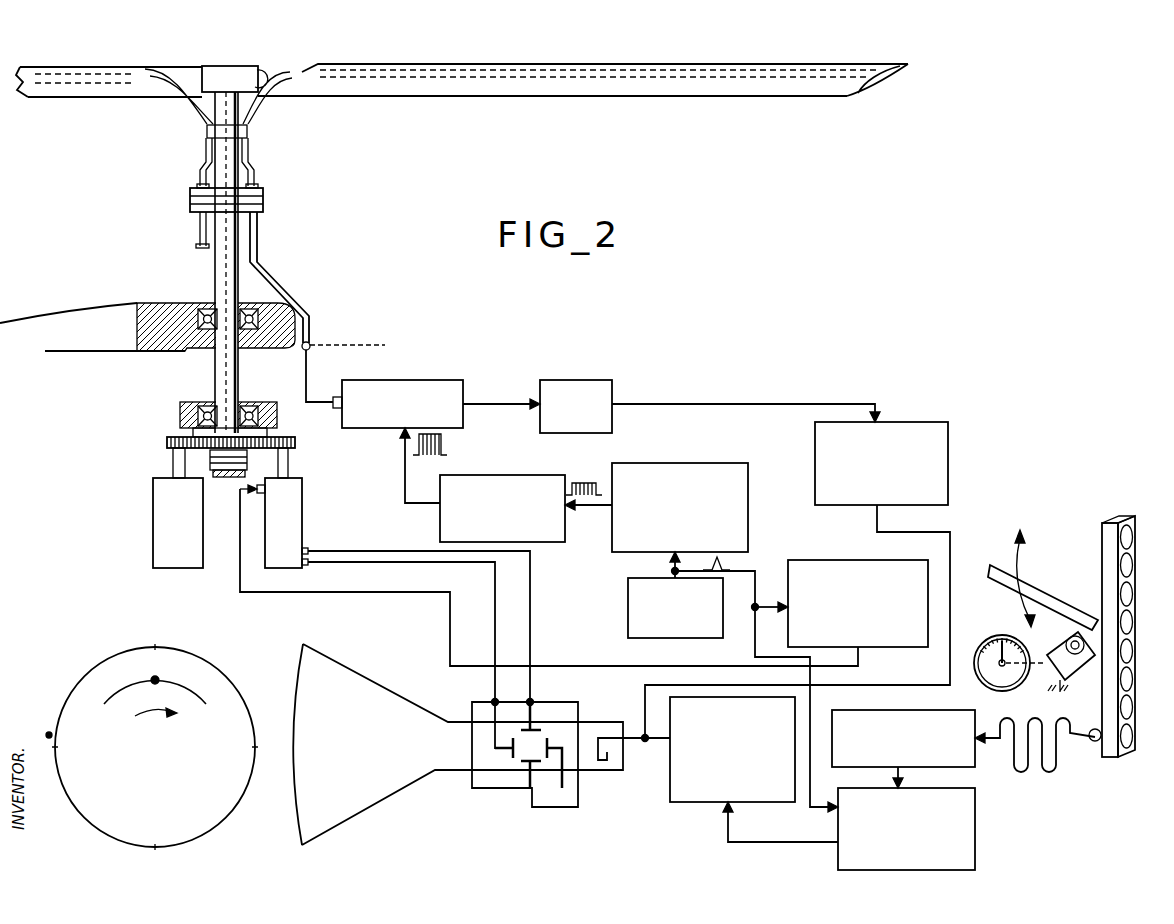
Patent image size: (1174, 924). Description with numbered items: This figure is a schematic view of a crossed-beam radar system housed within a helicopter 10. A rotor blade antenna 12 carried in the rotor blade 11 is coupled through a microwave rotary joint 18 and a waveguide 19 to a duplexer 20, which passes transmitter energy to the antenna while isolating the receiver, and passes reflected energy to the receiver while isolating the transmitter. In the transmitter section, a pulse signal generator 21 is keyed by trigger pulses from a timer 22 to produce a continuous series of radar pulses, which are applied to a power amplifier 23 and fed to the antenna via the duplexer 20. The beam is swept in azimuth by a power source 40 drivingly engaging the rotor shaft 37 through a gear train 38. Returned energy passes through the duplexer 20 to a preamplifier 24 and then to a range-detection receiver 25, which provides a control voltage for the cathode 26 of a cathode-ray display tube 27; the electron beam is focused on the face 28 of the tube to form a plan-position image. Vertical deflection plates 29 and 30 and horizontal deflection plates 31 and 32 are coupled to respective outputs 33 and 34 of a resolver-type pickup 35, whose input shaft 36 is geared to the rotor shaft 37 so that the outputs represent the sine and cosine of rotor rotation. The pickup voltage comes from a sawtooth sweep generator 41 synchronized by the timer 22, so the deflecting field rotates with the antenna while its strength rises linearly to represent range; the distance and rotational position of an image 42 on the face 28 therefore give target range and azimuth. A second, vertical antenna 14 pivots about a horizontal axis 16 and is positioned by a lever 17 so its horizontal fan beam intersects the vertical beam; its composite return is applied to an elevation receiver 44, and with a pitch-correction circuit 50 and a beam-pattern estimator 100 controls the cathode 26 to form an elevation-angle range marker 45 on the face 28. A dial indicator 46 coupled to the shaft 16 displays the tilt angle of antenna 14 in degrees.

The helicopter 10 is at (164, 303).
The rotor blade 11 is at (681, 96).
The rotor blade antenna 12 is at (488, 72).
The second antenna 14 is at (1105, 554).
The horizontal axis 16 is at (1070, 642).
The lever 17 is at (1000, 565).
The microwave rotary joint 18 is at (264, 200).
The waveguide 19 is at (274, 283).
The duplexer 20 is at (417, 380).
The pulse signal generator 21 is at (700, 464).
The timer 22 is at (628, 600).
The power amplifier 23 is at (510, 475).
The preamplifier 24 is at (590, 380).
The range-detection receiver 25 is at (900, 422).
The cathode 26 is at (600, 762).
The cathode-ray display tube 27 is at (458, 744).
The face 28 is at (91, 674).
The vertical deflection plate 29 is at (527, 728).
The vertical deflection plate 30 is at (528, 764).
The horizontal deflection plate 31 is at (514, 752).
The horizontal deflection plate 32 is at (552, 745).
The output 33 is at (308, 549).
The output 34 is at (308, 564).
The resolver-type pickup 35 is at (303, 497).
The input shaft 36 is at (290, 464).
The rotor shaft 37 is at (216, 374).
The gear train 38 is at (297, 443).
The power source 40 is at (153, 491).
The sawtooth sweep generator 41 is at (816, 560).
The image 42 is at (151, 680).
The elevation receiver 44 is at (962, 767).
The elevation-angle range marker 45 is at (196, 695).
The dial indicator 46 is at (986, 652).
The pitch-correction circuit 50 is at (975, 838).
The beam-pattern estimator 100 is at (684, 797).